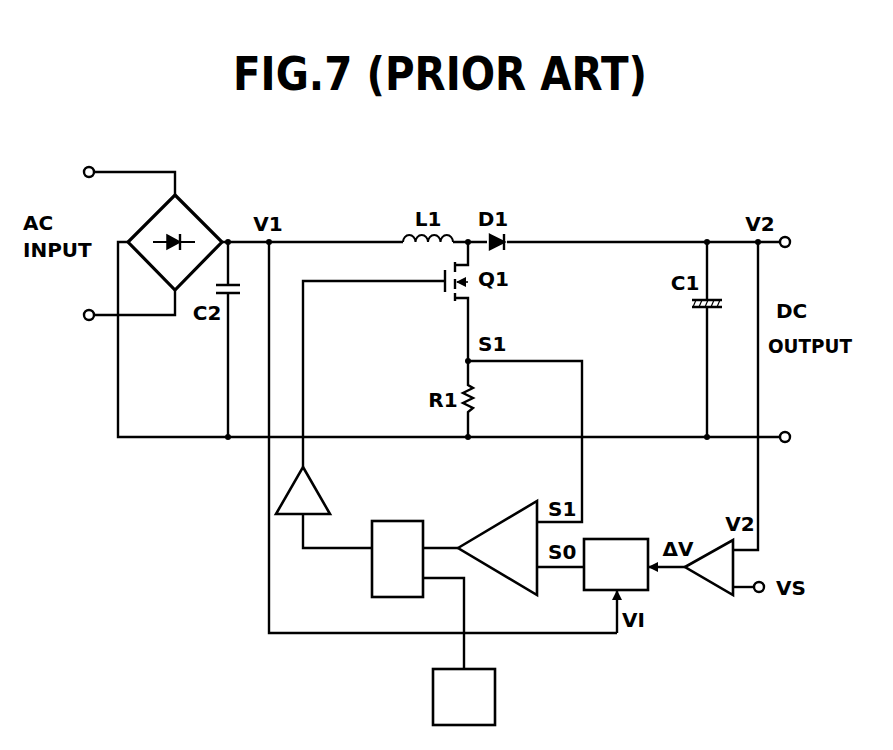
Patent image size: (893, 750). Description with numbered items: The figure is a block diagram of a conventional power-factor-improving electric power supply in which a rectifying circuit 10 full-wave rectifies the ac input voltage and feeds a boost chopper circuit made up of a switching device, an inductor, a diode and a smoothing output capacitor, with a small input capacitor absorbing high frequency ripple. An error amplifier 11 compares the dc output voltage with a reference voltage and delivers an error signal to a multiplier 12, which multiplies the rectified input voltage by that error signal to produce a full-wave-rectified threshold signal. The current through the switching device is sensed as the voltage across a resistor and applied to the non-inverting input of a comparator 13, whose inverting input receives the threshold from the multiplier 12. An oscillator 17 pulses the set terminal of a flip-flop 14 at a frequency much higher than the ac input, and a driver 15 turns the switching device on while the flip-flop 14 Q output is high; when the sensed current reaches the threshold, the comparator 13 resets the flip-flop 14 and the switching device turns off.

The rectifying circuit 10 is at (200, 220).
The error amplifier 11 is at (708, 583).
The multiplier 12 is at (620, 539).
The comparator 13 is at (500, 522).
The flip-flop 14 is at (393, 521).
The driver 15 is at (317, 493).
The oscillator 17 is at (495, 698).